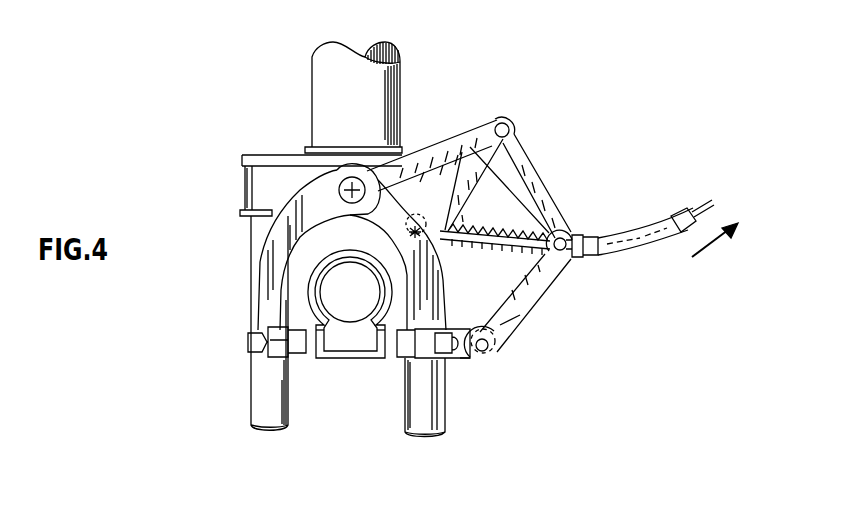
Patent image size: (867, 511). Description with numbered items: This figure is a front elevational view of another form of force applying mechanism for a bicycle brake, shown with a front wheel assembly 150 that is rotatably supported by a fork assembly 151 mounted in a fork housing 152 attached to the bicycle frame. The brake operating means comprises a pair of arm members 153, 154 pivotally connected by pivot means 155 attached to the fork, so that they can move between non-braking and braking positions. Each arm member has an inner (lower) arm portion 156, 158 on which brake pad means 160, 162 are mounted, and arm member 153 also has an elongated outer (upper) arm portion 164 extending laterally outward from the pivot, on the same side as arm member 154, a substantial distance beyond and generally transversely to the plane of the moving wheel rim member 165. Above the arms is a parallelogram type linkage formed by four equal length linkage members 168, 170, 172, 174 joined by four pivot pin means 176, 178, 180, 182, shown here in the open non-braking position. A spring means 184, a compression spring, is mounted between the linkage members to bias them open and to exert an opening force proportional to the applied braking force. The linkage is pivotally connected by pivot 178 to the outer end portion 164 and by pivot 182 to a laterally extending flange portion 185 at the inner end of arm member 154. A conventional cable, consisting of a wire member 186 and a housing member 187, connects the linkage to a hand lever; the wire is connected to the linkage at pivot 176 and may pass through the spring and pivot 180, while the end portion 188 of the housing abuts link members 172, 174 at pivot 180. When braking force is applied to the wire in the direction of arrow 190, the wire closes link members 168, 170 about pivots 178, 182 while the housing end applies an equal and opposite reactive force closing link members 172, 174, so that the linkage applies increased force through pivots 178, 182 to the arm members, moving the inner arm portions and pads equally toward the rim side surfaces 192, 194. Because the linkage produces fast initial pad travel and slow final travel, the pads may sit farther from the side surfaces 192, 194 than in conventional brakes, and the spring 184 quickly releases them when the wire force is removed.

The front wheel assembly 150 is at (342, 365).
The fork assembly 151 is at (243, 160).
The fork housing 152 is at (310, 62).
The arm member 153 is at (318, 172).
The arm member 154 is at (385, 218).
The pivot means 155 is at (337, 177).
The inner arm portion 156 is at (270, 297).
The inner arm portion 158 is at (425, 350).
The brake pad means 160 is at (283, 370).
The brake pad means 162 is at (425, 432).
The outer arm portion 164 is at (433, 145).
The wheel rim member 165 is at (344, 370).
The linkage member 168 is at (504, 302).
The linkage member 170 is at (457, 186).
The linkage member 172 is at (516, 150).
The linkage member 174 is at (505, 322).
The pivot pin means 176 is at (411, 237).
The pivot pin means 178 is at (504, 118).
The pivot pin means 180 is at (570, 232).
The pivot pin means 182 is at (492, 352).
The spring means 184 is at (523, 262).
The flange portion 185 is at (463, 363).
The wire member 186 is at (696, 207).
The housing member 187 is at (628, 256).
The end portion 188 is at (584, 234).
The arrow 190 is at (700, 252).
The side surface 192 is at (316, 350).
The side surface 194 is at (385, 350).